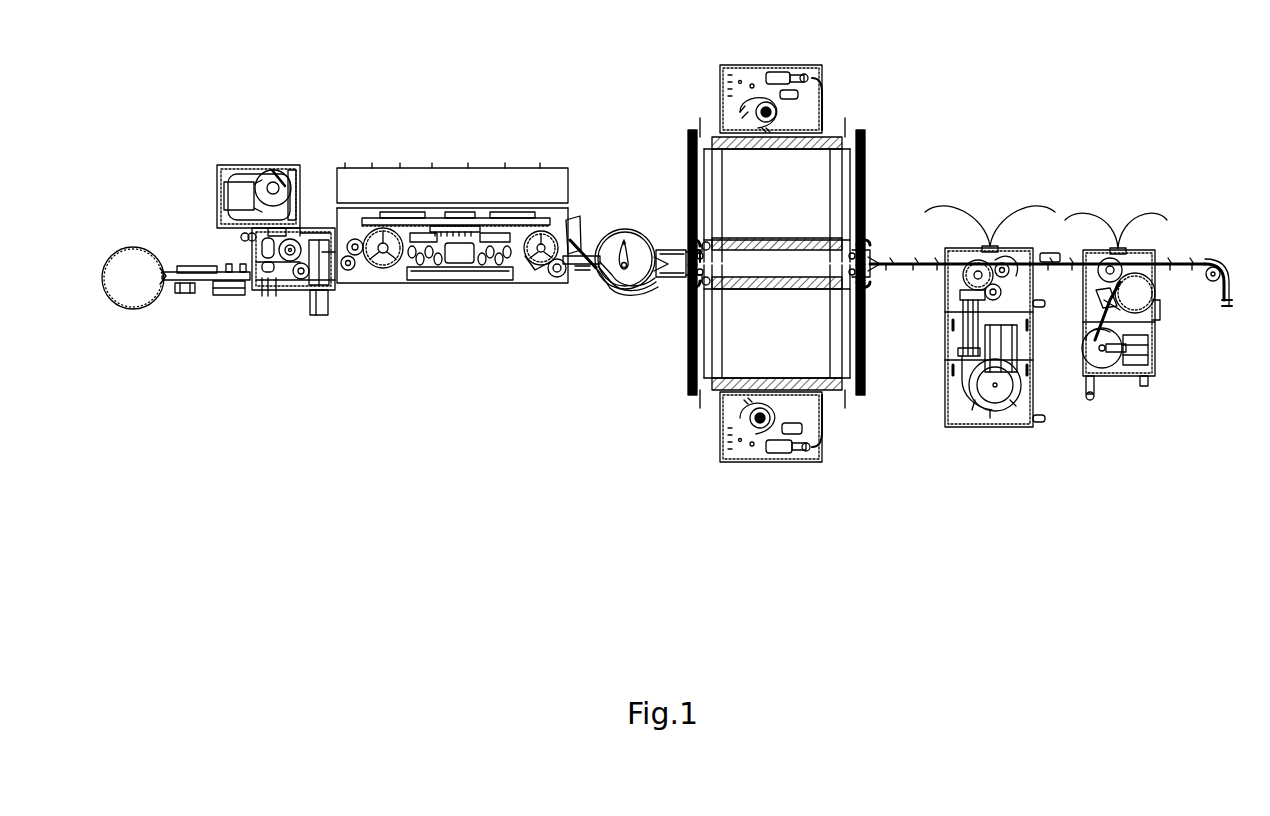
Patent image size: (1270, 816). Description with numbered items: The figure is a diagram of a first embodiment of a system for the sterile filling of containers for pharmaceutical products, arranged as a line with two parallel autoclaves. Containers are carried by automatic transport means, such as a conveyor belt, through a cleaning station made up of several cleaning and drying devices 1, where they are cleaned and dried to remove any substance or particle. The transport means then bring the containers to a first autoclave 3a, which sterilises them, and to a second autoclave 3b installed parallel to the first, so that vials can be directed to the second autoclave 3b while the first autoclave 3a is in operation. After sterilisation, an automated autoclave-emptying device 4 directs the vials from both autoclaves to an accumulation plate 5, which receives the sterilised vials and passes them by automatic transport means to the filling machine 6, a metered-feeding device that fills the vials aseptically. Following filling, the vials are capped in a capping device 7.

The cleaning and drying devices 1 is at (1062, 195).
The first autoclave 3a is at (805, 182).
The second autoclave 3b is at (805, 346).
The automated autoclave-emptying device 4 is at (662, 297).
The accumulation plate 5 is at (622, 340).
The filling machine 6 is at (460, 340).
The capping device 7 is at (270, 340).